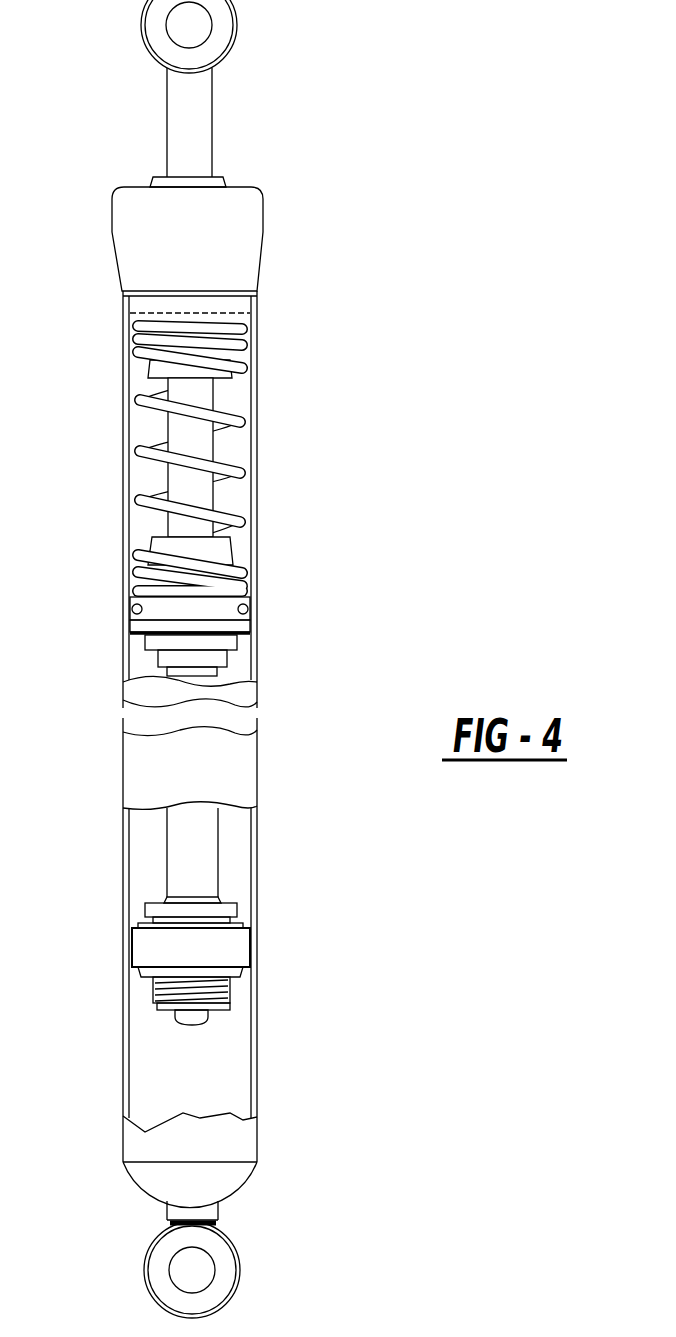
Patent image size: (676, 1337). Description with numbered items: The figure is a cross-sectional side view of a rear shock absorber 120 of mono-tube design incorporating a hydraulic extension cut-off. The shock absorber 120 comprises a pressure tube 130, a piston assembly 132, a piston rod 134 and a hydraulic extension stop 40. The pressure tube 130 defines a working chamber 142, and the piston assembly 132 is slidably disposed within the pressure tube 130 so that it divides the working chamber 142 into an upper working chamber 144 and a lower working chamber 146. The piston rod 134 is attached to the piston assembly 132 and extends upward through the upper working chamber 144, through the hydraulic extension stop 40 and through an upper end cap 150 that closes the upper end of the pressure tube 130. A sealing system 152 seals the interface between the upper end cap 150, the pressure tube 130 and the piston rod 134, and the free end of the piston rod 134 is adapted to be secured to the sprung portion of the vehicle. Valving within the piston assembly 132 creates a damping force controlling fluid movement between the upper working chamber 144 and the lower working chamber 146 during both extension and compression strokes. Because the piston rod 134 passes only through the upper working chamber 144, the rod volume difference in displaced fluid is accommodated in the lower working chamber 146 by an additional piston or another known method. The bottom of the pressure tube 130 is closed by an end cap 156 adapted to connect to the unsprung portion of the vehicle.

The rear shock absorber 120 is at (430, 177).
The piston rod 134 is at (183, 110).
The sealing system 152 is at (220, 177).
The upper end cap 150 is at (208, 243).
The pressure tube 130 is at (258, 1045).
The hydraulic extension stop 40 is at (237, 493).
The upper working chamber 144 is at (243, 845).
The piston assembly 132 is at (238, 947).
The working chamber 142 is at (168, 1052).
The lower working chamber 146 is at (222, 1084).
The end cap 156 is at (232, 1177).